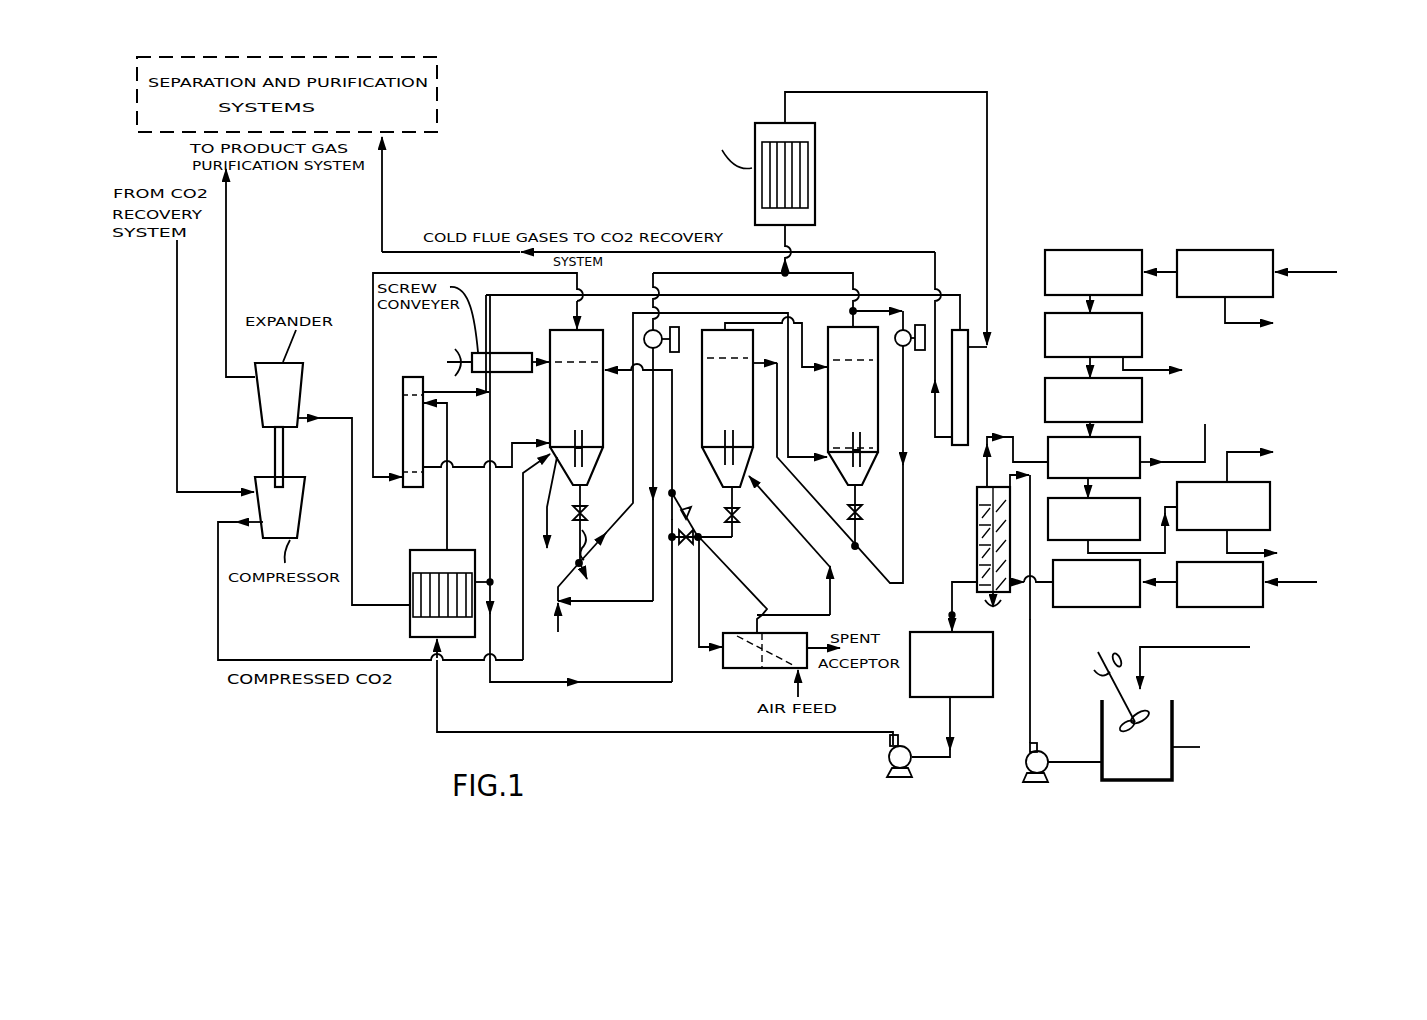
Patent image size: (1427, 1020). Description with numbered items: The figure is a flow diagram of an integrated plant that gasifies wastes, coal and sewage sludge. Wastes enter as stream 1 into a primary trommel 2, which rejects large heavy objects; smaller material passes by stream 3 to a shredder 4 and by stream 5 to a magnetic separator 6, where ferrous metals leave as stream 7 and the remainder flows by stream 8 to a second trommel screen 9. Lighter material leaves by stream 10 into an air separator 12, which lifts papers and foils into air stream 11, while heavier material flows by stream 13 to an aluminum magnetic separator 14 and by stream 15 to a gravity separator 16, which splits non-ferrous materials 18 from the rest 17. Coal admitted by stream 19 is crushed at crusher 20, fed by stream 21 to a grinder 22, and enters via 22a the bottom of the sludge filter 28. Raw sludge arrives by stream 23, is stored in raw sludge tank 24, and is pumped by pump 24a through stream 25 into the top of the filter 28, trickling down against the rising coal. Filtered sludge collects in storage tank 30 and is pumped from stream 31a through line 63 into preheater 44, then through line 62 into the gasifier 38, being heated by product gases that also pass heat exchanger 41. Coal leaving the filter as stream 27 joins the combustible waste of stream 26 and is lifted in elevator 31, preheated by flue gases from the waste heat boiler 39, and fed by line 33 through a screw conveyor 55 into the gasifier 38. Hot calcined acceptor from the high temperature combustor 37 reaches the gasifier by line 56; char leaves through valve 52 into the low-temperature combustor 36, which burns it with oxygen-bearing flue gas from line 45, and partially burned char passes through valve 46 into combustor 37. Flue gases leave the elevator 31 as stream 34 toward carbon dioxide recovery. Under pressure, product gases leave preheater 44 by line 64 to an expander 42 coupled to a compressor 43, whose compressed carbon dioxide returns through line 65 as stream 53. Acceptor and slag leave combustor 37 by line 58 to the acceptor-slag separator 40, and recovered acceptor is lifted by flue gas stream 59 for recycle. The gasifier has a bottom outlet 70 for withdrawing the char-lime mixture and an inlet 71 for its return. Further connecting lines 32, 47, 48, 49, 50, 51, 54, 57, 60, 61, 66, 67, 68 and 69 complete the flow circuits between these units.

The waste stream 1 is at (1318, 267).
The primary trommel 2 is at (1238, 250).
The stream 3 is at (1165, 268).
The shredder 4 is at (1100, 250).
The stream 5 is at (1085, 298).
The magnetic separator 6 is at (1143, 337).
The stream 7 is at (1160, 372).
The stream 8 is at (1085, 365).
The second trommel screen 9 is at (1145, 398).
The stream 10 is at (1090, 427).
The air stream 11 is at (1215, 440).
The air separator 12 is at (1142, 445).
The stream 13 is at (1090, 490).
The aluminum magnetic separator 14 is at (1140, 521).
The stream 15 is at (1245, 483).
The gravity separator 16 is at (1275, 500).
The rest of the materials 17 is at (1240, 447).
The non-ferrous materials 18 is at (1280, 540).
The coal stream 19 is at (1300, 582).
The coal crusher 20 is at (1265, 600).
The stream 21 is at (1165, 590).
The grinder 22 is at (1103, 607).
The ground coal inlet 22a is at (1040, 595).
The raw sludge stream 23 is at (1185, 648).
The raw sludge tank 24 is at (1147, 765).
The pump 24a is at (1034, 782).
The stream 25 is at (1030, 712).
The stream 26 is at (1008, 435).
The stream 27 is at (980, 465).
The sludge filter 28 is at (975, 521).
The storage tank 30 is at (975, 698).
The elevator 31 is at (970, 397).
The pump stream 31a is at (938, 757).
The boiler flue gas line 32 is at (988, 187).
The line 33 is at (960, 295).
The stream 34 is at (933, 408).
The low-temperature combustor 36 is at (843, 477).
The high temperature combustor 37 is at (707, 472).
The gasifier 38 is at (555, 477).
The waste heat boiler 39 is at (818, 163).
The acceptor-slag separator 40 is at (742, 670).
The heat exchanger 41 is at (413, 377).
The expander 42 is at (304, 376).
The compressor 43 is at (256, 475).
The preheater 44 is at (408, 565).
The line 45 is at (873, 472).
The valve 46 is at (870, 514).
The combustor gas line 47 is at (891, 585).
The high temperature combustor outlet line 48 is at (806, 371).
The recycle line to low temperature combustor 49 is at (803, 455).
The flue gas line 50 is at (810, 262).
The flue gas line to gasifier valve 51 is at (740, 273).
The valve 52 is at (585, 521).
The stream 53 is at (522, 508).
The gasifier solids transfer line 54 is at (633, 455).
The screw conveyor 55 is at (505, 375).
The line 56 is at (674, 432).
The acceptor return line 57 is at (826, 590).
The line 58 is at (738, 521).
The flue gas stream 59 is at (670, 640).
The lock hopper gas line 60 is at (488, 473).
The lock hopper gas recycle line 61 is at (373, 372).
The line 62 is at (446, 500).
The line 63 is at (462, 730).
The line 64 is at (350, 498).
The line 65 is at (237, 658).
The lock hopper to gasifier feed line 66 is at (527, 434).
The carbon dioxide inlet line 67 is at (176, 443).
The product gas line 68 is at (227, 278).
The gasifier drain line 69 is at (545, 527).
The outlet 70 is at (590, 568).
The inlet 71 is at (561, 632).